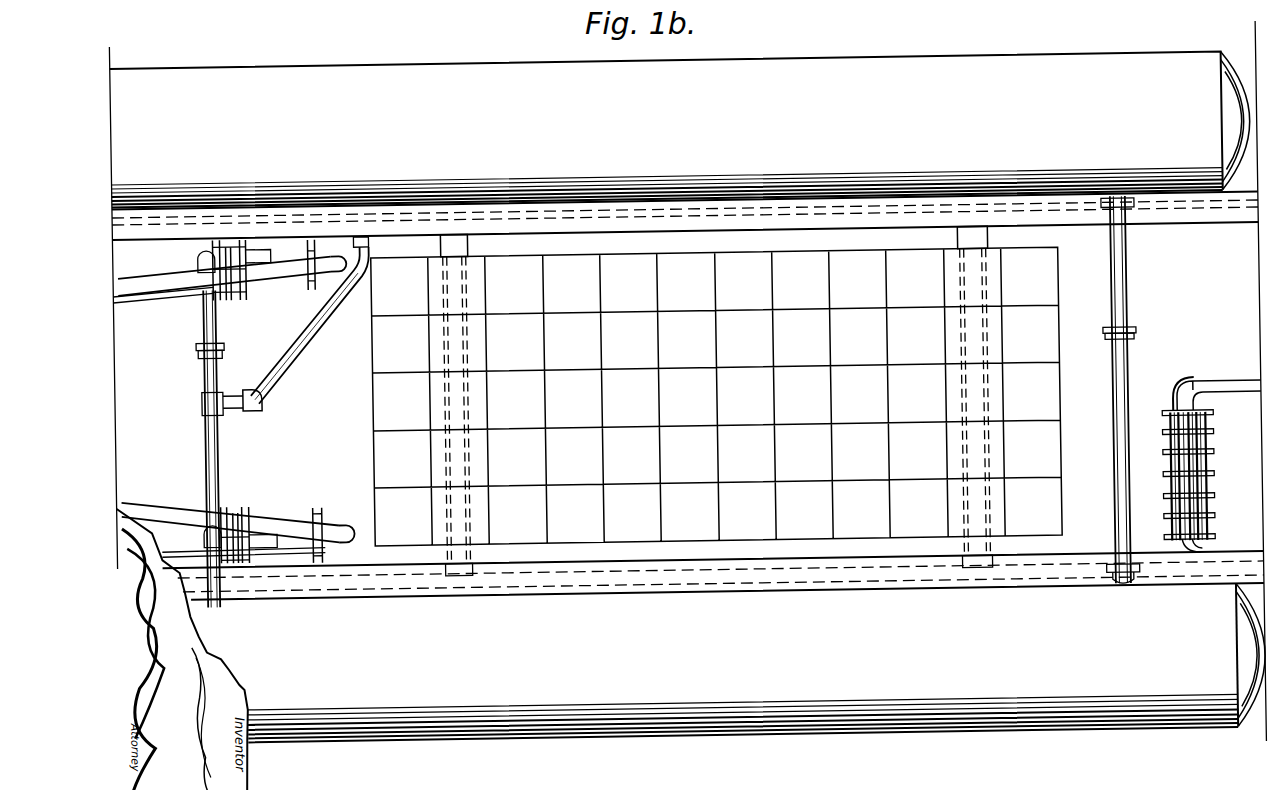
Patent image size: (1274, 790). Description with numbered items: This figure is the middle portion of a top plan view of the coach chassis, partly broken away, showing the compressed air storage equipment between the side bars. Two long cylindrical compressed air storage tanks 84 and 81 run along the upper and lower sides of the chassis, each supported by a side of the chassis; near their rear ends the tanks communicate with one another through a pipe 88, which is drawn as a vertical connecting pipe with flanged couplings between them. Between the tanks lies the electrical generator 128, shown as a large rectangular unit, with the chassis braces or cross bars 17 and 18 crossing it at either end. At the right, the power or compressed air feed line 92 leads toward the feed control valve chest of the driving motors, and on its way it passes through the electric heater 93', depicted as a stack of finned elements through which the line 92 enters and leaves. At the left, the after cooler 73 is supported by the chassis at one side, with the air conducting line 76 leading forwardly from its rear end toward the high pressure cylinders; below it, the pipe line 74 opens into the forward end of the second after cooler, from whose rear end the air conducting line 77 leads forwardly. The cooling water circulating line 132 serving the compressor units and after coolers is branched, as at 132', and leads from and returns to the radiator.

The compressed air storage tank 84 is at (680, 129).
The compressed air storage tank 81 is at (756, 662).
The electrical generator 128 is at (716, 396).
The cross bar 17 is at (471, 247).
The cross bar 18 is at (958, 242).
The pipe 88 is at (1130, 291).
The electric heater 93' is at (1208, 474).
The power or compressed air feed line 92 is at (1196, 547).
The after cooler 73 is at (143, 246).
The air conducting line 76 is at (159, 285).
The branch of cooling water circulating line 132' is at (250, 448).
The cooling water circulating line 132 is at (295, 324).
The air conducting line 77 is at (210, 511).
The pipe line 74 is at (140, 522).